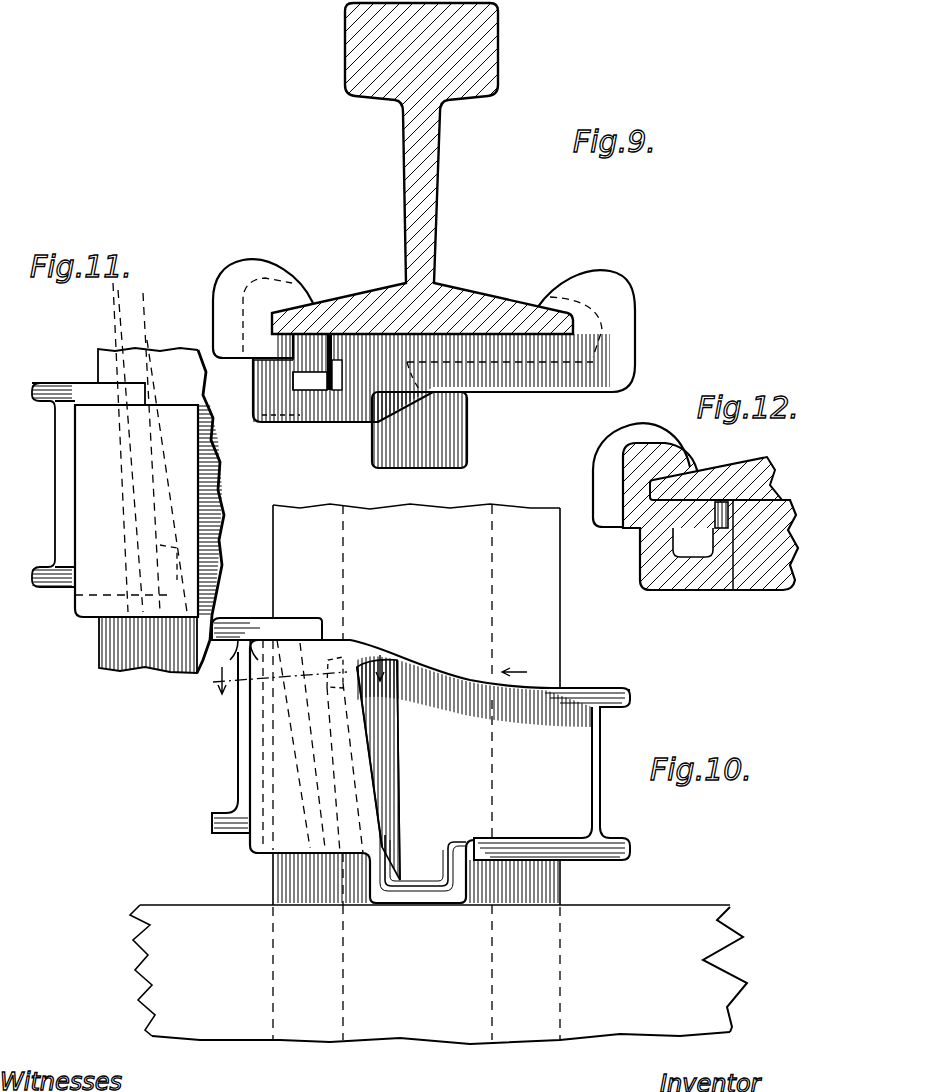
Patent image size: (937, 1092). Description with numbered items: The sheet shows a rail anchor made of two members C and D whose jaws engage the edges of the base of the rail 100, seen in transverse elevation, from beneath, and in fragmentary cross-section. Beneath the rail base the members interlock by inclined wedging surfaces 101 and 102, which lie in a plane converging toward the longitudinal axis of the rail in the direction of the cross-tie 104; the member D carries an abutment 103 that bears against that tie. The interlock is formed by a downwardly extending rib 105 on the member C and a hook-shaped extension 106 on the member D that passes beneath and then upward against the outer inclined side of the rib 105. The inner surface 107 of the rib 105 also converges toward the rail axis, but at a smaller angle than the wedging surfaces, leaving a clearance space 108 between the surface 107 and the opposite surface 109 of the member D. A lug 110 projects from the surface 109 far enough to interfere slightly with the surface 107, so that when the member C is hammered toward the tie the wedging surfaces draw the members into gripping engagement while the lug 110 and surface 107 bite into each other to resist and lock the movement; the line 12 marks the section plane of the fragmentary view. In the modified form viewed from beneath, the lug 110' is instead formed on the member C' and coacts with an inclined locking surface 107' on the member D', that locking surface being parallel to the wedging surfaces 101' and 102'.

In FIG. 9, the rail 100 is at (423, 194).
In FIG. 9, the inclined interlocking surface 101 is at (424, 351).
In FIG. 12, the inclined interlocking surface 101 is at (695, 506).
In FIG. 10, the inclined interlocking surface 101 is at (421, 740).
In FIG. 9, the inclined interlocking surface 102 is at (301, 416).
In FIG. 12, the inclined interlocking surface 102 is at (693, 578).
In FIG. 10, the inclined interlocking surface 102 is at (423, 860).
In FIG. 9, the abutment 103 is at (419, 430).
In FIG. 10, the abutment 103 is at (409, 896).
In FIG. 10, the cross-tie 104 is at (438, 974).
In FIG. 9, the downwardly extending rib 105 is at (312, 362).
In FIG. 9, the hook-shaped extension 106 is at (263, 372).
In FIG. 9, the inner surface 107 is at (352, 312).
In FIG. 12, the inner surface 107 is at (709, 487).
In FIG. 10, the inner surface 107 is at (417, 735).
In FIG. 9, the clearance space 108 is at (345, 335).
In FIG. 12, the clearance space 108 is at (730, 503).
In FIG. 10, the clearance space 108 is at (350, 807).
In FIG. 9, the opposite surface 109 is at (338, 362).
In FIG. 12, the opposite surface 109 is at (727, 560).
In FIG. 9, the lug 110 is at (463, 318).
In FIG. 12, the lug 110 is at (742, 592).
In FIG. 10, the lug 110 is at (381, 727).
In FIG. 10, the section line 12 is at (304, 683).
In FIG. 9, the anchor member C is at (261, 277).
In FIG. 12, the anchor member C is at (592, 447).
In FIG. 10, the anchor member C is at (243, 725).
In FIG. 9, the anchor member D is at (598, 293).
In FIG. 12, the anchor member D is at (793, 600).
In FIG. 10, the anchor member D is at (560, 774).
In FIG. 11, the anchor member C' is at (81, 485).
In FIG. 11, the anchor member D' is at (136, 427).
In FIG. 11, the inclined wedging surface 101' is at (161, 475).
In FIG. 11, the inclined wedging surface 102' is at (136, 511).
In FIG. 11, the inclined locking surface 107' is at (165, 452).
In FIG. 11, the lug 110' is at (126, 570).